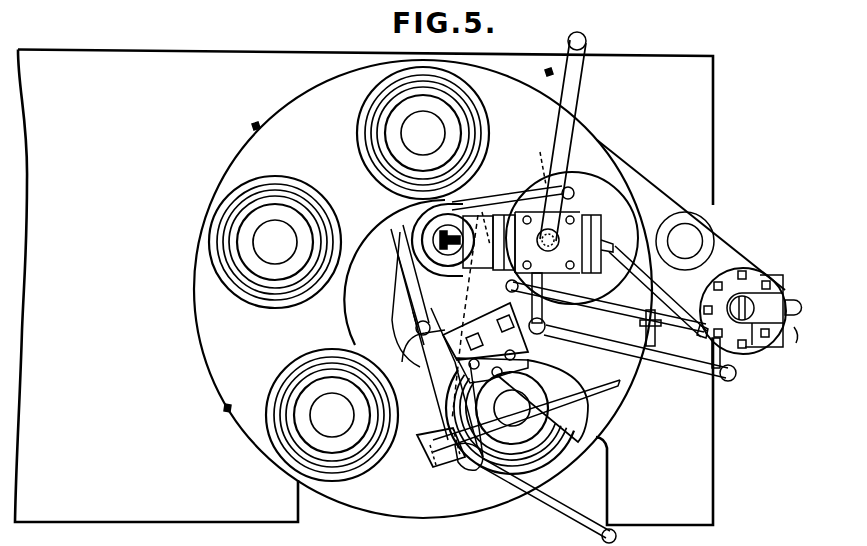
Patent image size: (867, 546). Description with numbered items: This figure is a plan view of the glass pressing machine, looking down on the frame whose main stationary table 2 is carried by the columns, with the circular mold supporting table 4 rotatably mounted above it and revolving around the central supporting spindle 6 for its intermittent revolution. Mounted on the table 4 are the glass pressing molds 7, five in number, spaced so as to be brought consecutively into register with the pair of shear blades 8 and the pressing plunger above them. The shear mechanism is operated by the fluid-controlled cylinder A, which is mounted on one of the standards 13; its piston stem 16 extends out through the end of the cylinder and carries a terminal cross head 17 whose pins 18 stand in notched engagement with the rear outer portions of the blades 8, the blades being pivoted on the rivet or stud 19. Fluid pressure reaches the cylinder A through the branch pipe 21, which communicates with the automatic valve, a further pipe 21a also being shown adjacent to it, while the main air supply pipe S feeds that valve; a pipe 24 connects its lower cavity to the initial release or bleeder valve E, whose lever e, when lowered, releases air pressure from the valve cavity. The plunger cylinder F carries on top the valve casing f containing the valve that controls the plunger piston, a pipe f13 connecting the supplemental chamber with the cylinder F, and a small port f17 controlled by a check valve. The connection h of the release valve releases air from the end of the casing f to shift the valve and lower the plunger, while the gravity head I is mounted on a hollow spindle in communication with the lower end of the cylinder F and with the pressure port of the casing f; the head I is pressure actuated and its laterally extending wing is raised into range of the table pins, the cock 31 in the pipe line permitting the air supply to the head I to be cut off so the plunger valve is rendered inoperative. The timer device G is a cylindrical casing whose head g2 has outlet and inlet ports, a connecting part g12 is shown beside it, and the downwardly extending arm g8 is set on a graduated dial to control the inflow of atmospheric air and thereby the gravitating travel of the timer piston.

The main stationary table 2 is at (364, 288).
The mold supporting table 4 is at (311, 108).
The central supporting spindle 6 is at (338, 313).
The glass pressing mold 7 is at (385, 121).
The shear blade 8 is at (521, 408).
The spindle 13 is at (455, 228).
The stem 16 is at (406, 391).
The cross head 17 is at (530, 350).
The pin 18 is at (530, 357).
The rivet or stud 19 is at (502, 372).
The branch pipe 21 is at (396, 240).
The rod 21a is at (404, 266).
The pipe 24 is at (544, 503).
The valve or cock 31 is at (592, 392).
The shear cylinder A is at (460, 299).
The release or bleeder valve E is at (450, 462).
The plunger cylinder F is at (612, 200).
The timer device G is at (758, 280).
The gravity head I is at (705, 352).
The main air supply pipe S is at (580, 92).
The lever e is at (608, 395).
The valve casing f is at (580, 245).
The pipe f13 is at (513, 178).
The port f17 is at (461, 248).
The rod g12 is at (650, 298).
The head g2 is at (755, 335).
The arm g8 is at (792, 330).
The connection h is at (617, 310).